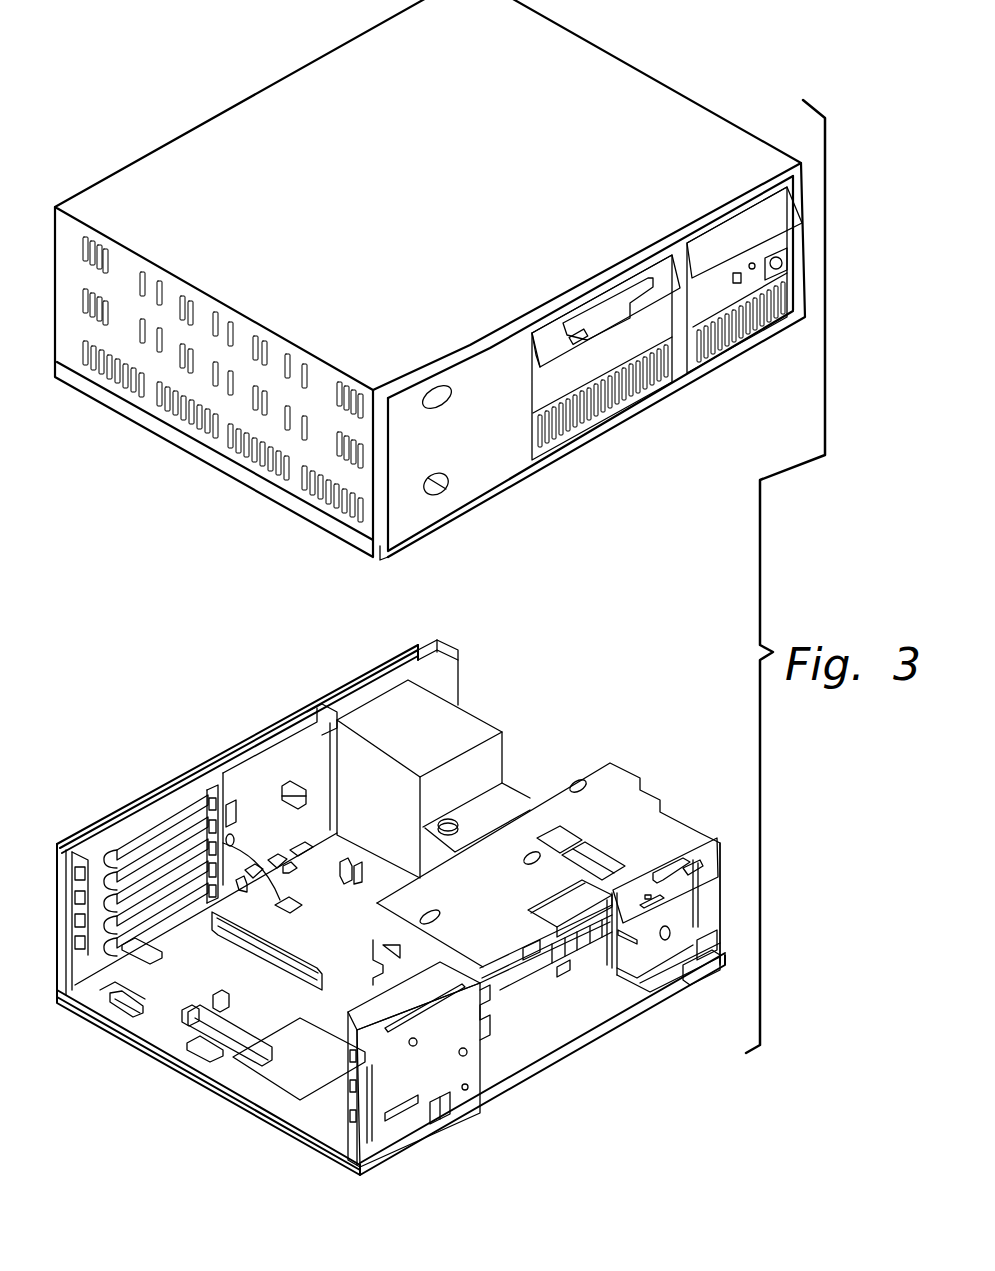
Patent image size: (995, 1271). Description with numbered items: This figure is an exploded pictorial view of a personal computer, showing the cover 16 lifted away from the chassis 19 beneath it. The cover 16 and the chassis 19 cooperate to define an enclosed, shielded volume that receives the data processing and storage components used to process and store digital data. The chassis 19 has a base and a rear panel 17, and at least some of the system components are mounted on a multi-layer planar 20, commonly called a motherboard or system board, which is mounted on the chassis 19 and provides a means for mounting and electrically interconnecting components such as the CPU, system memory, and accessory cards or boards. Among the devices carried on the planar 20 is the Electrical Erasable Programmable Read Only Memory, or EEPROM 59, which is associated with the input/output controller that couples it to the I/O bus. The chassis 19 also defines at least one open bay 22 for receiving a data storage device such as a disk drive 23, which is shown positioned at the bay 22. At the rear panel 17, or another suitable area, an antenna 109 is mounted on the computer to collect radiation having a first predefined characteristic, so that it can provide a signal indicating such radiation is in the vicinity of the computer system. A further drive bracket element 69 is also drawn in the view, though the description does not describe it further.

The cover 16 is at (246, 98).
The rear panel 17 is at (128, 812).
The chassis 19 is at (170, 1062).
The multi-layer planar 20 is at (117, 985).
The open bay 22 is at (635, 922).
The disk drive 23 is at (718, 847).
The Electrical Erasable Programmable Read Only Memory (EEPROM) 59 is at (302, 908).
The drive bracket 69 is at (345, 1085).
The antenna 109 is at (232, 803).